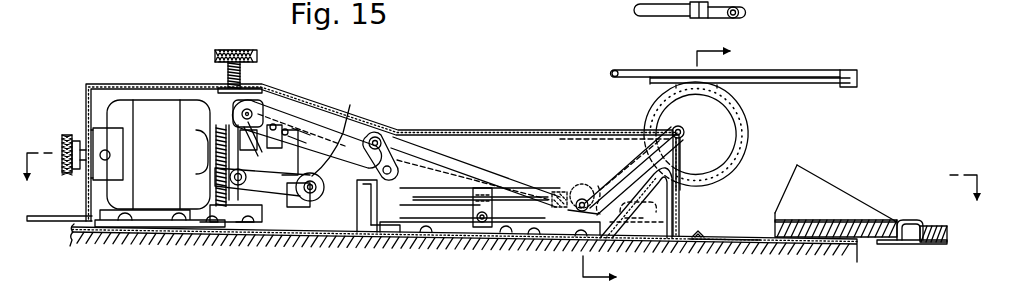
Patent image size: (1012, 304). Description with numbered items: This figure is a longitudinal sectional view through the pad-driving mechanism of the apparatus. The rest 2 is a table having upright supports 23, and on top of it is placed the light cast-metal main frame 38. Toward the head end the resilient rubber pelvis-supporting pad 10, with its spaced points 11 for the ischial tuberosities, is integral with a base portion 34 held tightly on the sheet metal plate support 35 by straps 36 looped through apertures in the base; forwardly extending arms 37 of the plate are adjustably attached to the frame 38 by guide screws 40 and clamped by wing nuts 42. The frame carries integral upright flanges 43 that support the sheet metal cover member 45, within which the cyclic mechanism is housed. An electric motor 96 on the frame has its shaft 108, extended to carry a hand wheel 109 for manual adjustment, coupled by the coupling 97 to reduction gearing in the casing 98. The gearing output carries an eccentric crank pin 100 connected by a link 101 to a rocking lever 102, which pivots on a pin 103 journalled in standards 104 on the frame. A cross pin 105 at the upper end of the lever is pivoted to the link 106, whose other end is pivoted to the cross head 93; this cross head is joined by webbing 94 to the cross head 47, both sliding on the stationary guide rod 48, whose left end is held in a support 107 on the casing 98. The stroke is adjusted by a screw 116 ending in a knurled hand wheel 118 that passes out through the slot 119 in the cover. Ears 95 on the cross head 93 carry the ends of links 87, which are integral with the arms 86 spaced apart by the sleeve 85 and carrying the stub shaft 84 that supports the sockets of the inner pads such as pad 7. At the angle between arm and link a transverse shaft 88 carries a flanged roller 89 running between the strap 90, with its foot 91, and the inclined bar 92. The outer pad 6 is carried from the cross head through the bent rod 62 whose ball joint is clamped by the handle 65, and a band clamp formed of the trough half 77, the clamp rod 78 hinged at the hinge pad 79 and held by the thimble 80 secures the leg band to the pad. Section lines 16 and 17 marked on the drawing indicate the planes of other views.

The rest 2 is at (834, 246).
The pad 6 is at (742, 108).
The pad 7 is at (733, 148).
The pad 10 is at (823, 190).
The spaced points 11 is at (799, 166).
The section line 16- 16 is at (503, 162).
The section line 17- 17 is at (641, 166).
The upright supports 23 is at (190, 126).
The base portion 34 is at (940, 224).
The plate support 35 is at (945, 241).
The straps 36 is at (903, 220).
The arms 37 is at (728, 232).
The main frame 38 is at (748, 246).
The guide screws 40 is at (704, 232).
The wing nuts 42 is at (630, 203).
The upright flanges 43 is at (486, 236).
The cover member 45 is at (488, 130).
The cross head 47 is at (495, 183).
The guide rod 48 is at (457, 194).
The bent rod 62 is at (636, 11).
The handle 65 is at (742, 13).
The clamp half 77 is at (814, 85).
The clamp rod 78 is at (797, 70).
The hinge pad 79 is at (613, 70).
The thimble 80 is at (860, 77).
The stub shaft 84 is at (668, 128).
The intermediate sleeve 85 is at (690, 138).
The arms 86 is at (656, 148).
The links 87 is at (460, 170).
The transverse shaft 88 is at (578, 199).
The flanged roller 89 is at (598, 190).
The strap 90 is at (614, 138).
The foot 91 is at (536, 240).
The bar 92 is at (604, 238).
The cross head 93 is at (412, 133).
The webbing 94 is at (455, 234).
The ears 95 is at (380, 137).
The electric motor 96 is at (168, 161).
The coupling 97 is at (262, 152).
The casing 98 is at (306, 202).
The eccentric crank pin 100 is at (350, 112).
The link 101 is at (318, 200).
The rocking lever 102 is at (240, 205).
The shaft 103 is at (209, 230).
The standards 104 is at (243, 230).
The cross pin 105 is at (252, 108).
The link 106 is at (370, 134).
The support 107 is at (374, 234).
The motor shaft 108 is at (76, 134).
The hand wheel 109 is at (64, 133).
The screw 116 is at (196, 130).
The knurled hand wheel 118 is at (257, 56).
The slot 119 is at (248, 92).